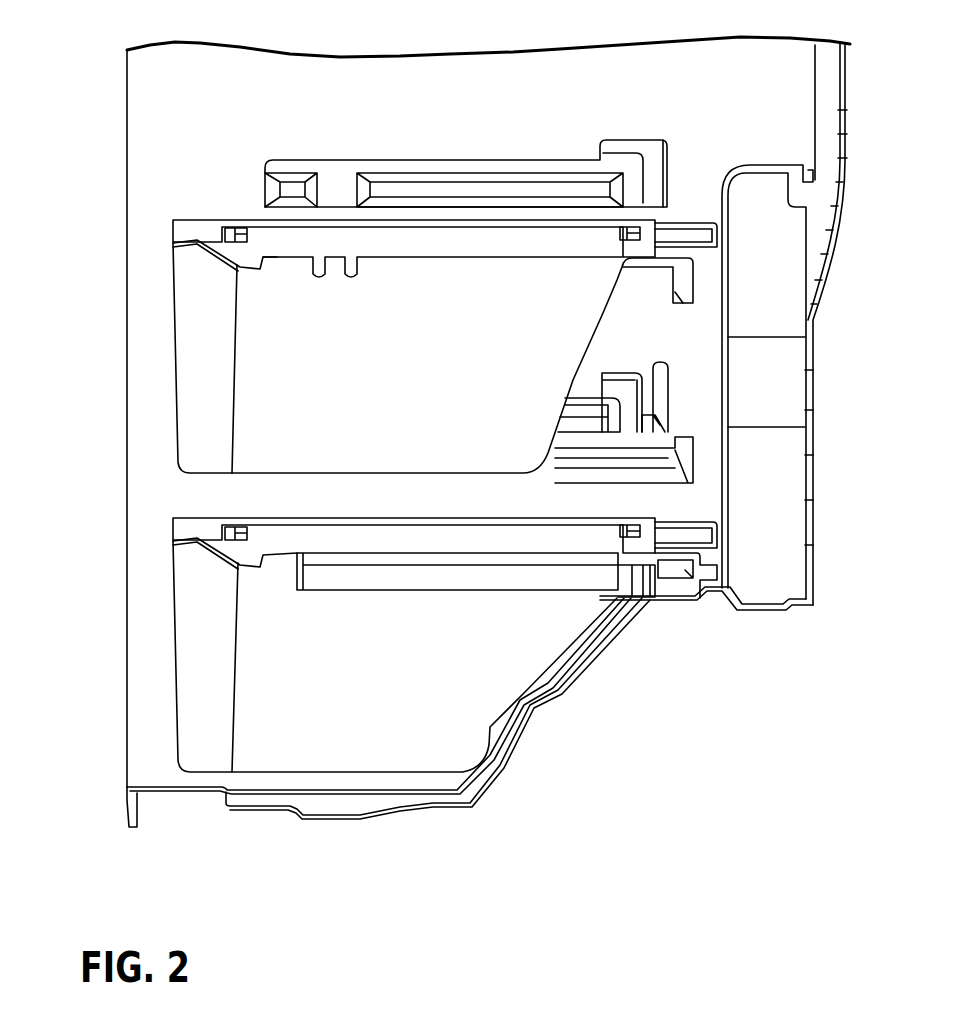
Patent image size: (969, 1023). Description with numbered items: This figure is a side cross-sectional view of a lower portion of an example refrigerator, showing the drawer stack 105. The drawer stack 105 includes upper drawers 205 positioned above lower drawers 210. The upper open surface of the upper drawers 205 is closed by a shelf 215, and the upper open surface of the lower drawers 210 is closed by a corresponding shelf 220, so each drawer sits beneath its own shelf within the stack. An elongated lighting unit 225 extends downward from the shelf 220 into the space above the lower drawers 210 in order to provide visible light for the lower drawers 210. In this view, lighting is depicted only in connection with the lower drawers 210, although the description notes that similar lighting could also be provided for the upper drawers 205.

The drawer stack 105 is at (104, 92).
The upper drawers 205 is at (156, 350).
The lower drawers 210 is at (160, 623).
The shelf 215 is at (210, 220).
The shelf 220 is at (200, 518).
The elongated lighting unit 225 is at (452, 582).